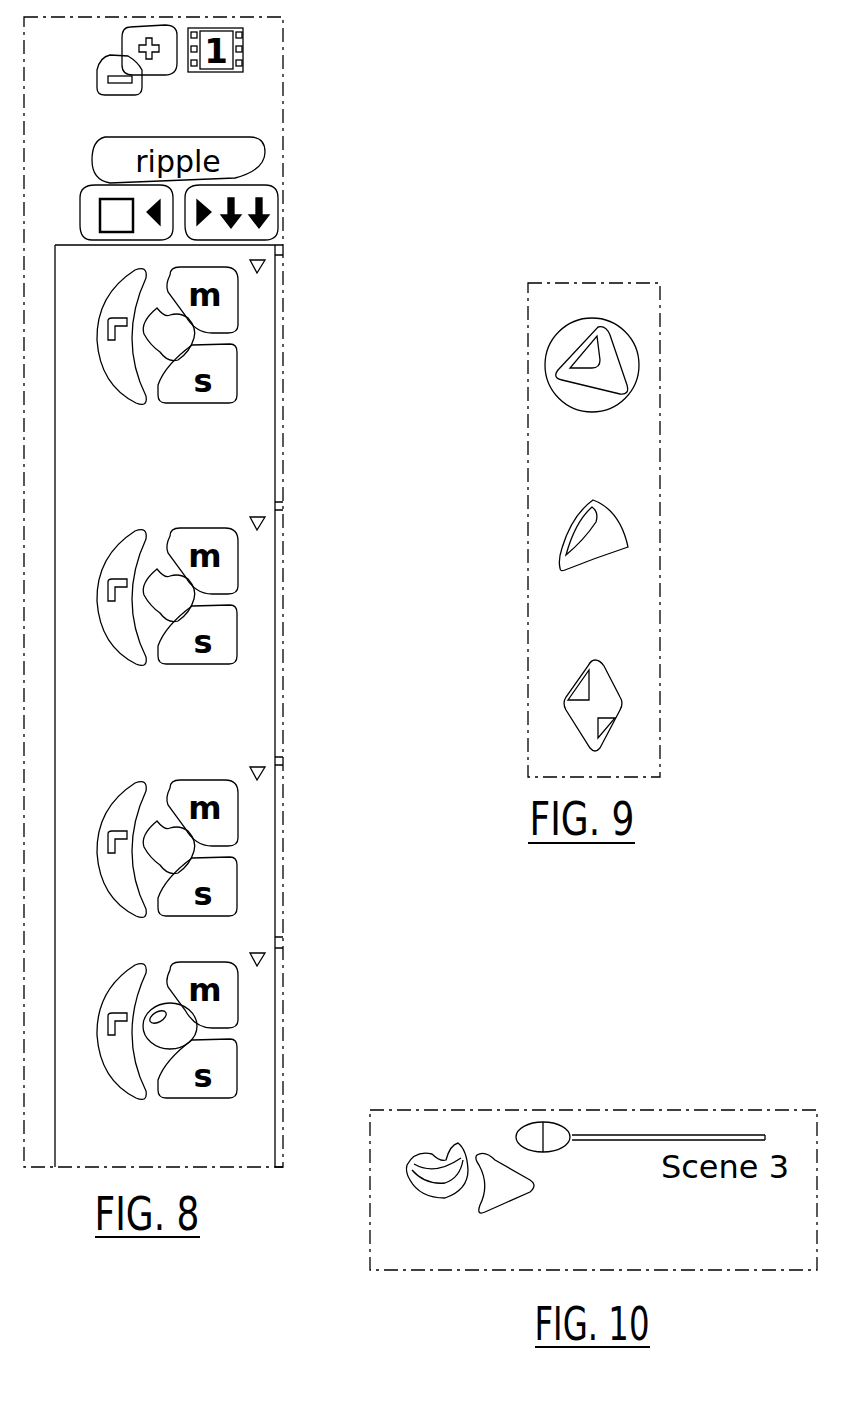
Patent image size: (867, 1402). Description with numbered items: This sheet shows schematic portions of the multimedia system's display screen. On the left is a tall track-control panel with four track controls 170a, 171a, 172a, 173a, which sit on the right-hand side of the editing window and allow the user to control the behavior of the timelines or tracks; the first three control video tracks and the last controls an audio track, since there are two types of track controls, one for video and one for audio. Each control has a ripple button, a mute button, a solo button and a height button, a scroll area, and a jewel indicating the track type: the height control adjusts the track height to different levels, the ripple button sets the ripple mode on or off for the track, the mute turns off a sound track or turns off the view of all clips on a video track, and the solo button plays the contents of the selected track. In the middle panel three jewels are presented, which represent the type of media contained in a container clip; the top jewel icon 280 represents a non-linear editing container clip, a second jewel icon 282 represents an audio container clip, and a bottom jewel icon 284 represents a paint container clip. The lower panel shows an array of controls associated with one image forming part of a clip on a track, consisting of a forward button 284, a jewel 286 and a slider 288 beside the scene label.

In FIG. 8, the track control 170a is at (260, 307).
In FIG. 8, the track control 171a is at (260, 562).
In FIG. 8, the track control 172a is at (253, 912).
In FIG. 8, the track control 173a is at (253, 1013).
In FIG. 9, the top jewel icon 280 is at (635, 325).
In FIG. 9, the wedge clip icon 282 is at (630, 518).
In FIG. 9, the forward button 284 is at (630, 668).
In FIG. 10, the forward button 284 is at (496, 1162).
In FIG. 10, the jewel 286 is at (417, 1190).
In FIG. 10, the slider 288 is at (618, 1137).